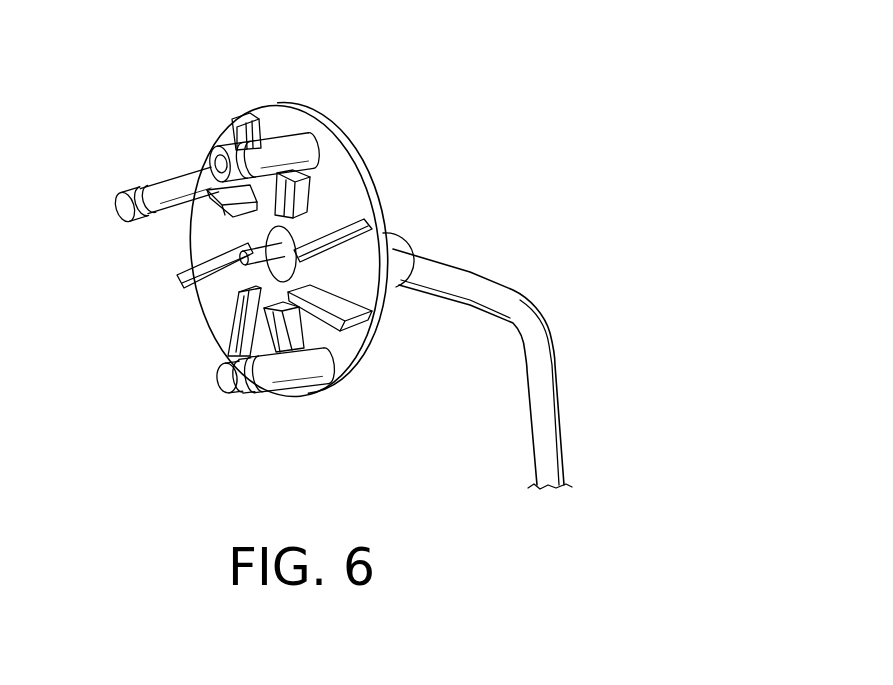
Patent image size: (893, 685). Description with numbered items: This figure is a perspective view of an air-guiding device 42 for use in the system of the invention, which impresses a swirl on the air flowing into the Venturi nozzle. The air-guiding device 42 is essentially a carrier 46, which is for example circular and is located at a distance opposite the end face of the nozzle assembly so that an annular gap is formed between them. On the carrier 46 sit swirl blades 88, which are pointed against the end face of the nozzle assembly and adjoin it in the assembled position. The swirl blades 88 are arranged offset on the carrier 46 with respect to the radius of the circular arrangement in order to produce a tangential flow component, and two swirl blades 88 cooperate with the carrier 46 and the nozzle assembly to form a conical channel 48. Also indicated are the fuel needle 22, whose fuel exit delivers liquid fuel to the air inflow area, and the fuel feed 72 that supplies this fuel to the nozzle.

The fuel needle 22 is at (199, 291).
The air-guiding device 42 is at (278, 211).
The carrier 46 is at (361, 177).
The conical channel 48 is at (352, 277).
The fuel feed 72 is at (405, 247).
The swirl blades 88 is at (247, 121).